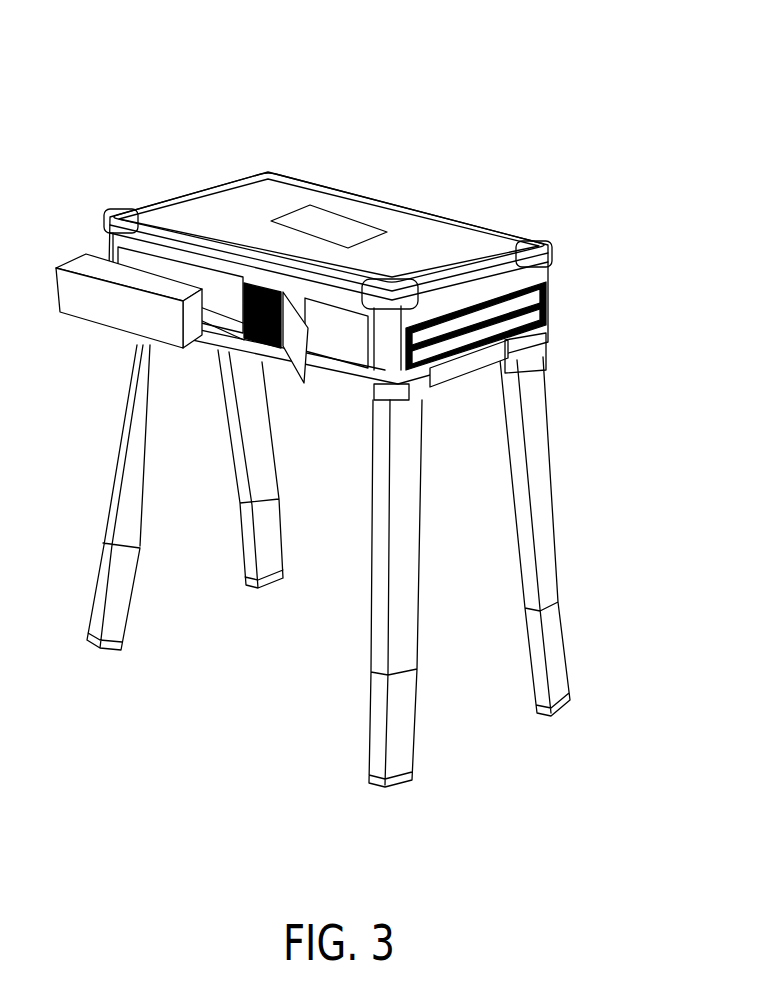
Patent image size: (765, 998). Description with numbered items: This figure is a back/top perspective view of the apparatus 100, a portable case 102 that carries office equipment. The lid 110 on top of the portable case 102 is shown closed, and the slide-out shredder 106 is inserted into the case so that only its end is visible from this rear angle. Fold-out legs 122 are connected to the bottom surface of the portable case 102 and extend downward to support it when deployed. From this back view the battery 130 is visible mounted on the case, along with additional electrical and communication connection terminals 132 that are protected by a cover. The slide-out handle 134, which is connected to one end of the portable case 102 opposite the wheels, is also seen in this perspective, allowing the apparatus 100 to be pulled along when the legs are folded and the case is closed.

The apparatus 100 is at (333, 407).
The portable case 102 is at (338, 307).
The slide-out shredder 106 is at (503, 334).
The lid 110 is at (331, 189).
The fold-out legs 122 is at (402, 755).
The battery 130 is at (105, 306).
The electrical and communication connection terminals 132 is at (243, 340).
The slide-out handle 134 is at (487, 362).